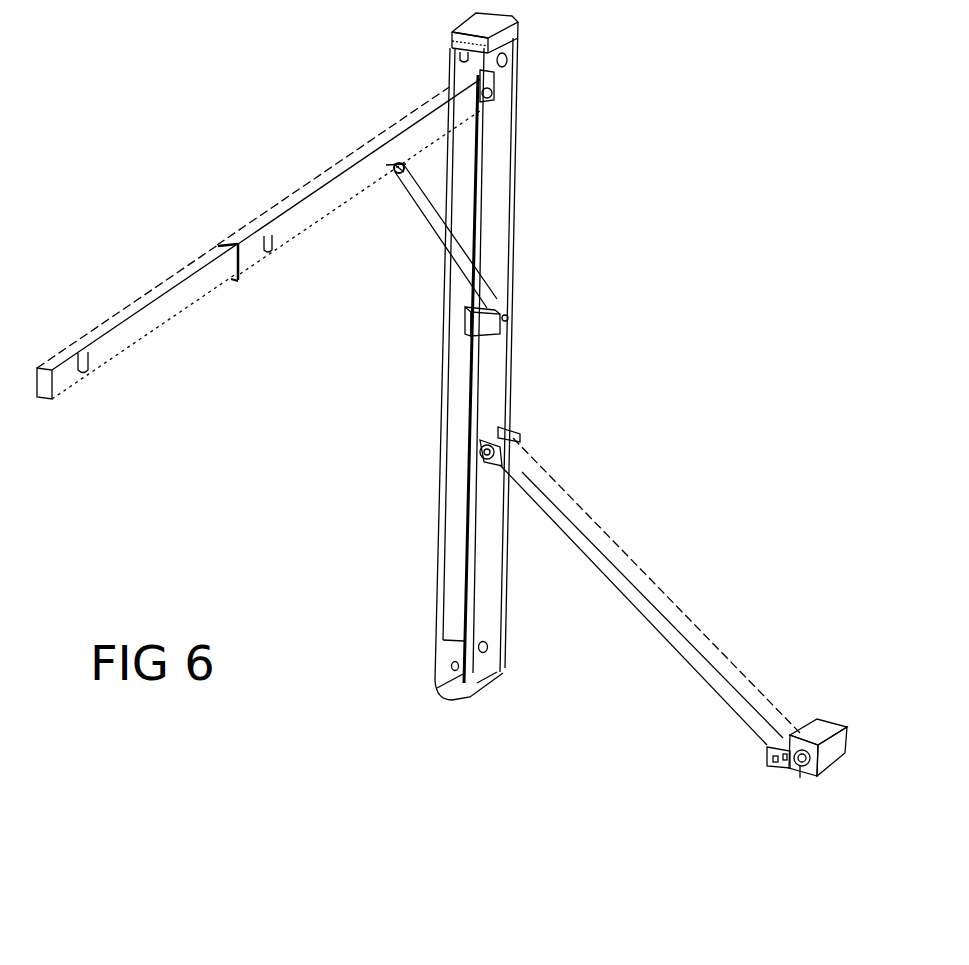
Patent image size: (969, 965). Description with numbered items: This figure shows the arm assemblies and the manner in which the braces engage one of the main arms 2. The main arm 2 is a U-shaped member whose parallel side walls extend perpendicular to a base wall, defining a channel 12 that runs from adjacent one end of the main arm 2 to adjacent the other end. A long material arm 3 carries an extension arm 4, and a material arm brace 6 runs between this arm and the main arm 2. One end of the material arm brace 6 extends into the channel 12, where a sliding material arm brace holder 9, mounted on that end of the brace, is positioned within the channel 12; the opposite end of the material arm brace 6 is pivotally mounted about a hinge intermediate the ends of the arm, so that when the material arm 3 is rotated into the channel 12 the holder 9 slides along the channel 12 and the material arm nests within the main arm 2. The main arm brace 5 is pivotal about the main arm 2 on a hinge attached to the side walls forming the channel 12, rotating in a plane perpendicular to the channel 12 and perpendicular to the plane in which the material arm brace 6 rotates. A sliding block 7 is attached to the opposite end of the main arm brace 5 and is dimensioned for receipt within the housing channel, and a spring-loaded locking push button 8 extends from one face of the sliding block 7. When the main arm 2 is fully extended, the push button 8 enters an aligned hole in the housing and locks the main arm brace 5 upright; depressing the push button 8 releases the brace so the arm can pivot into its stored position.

The main arm 2 is at (498, 220).
The material arm 3 is at (348, 154).
The extension arm 4 is at (155, 290).
The main arm brace 5 is at (592, 534).
The material arm brace 6 is at (412, 208).
The sliding block 7 is at (828, 720).
The locking push button 8 is at (801, 780).
The material arm brace holder 9 is at (508, 318).
The channel 12 is at (456, 430).